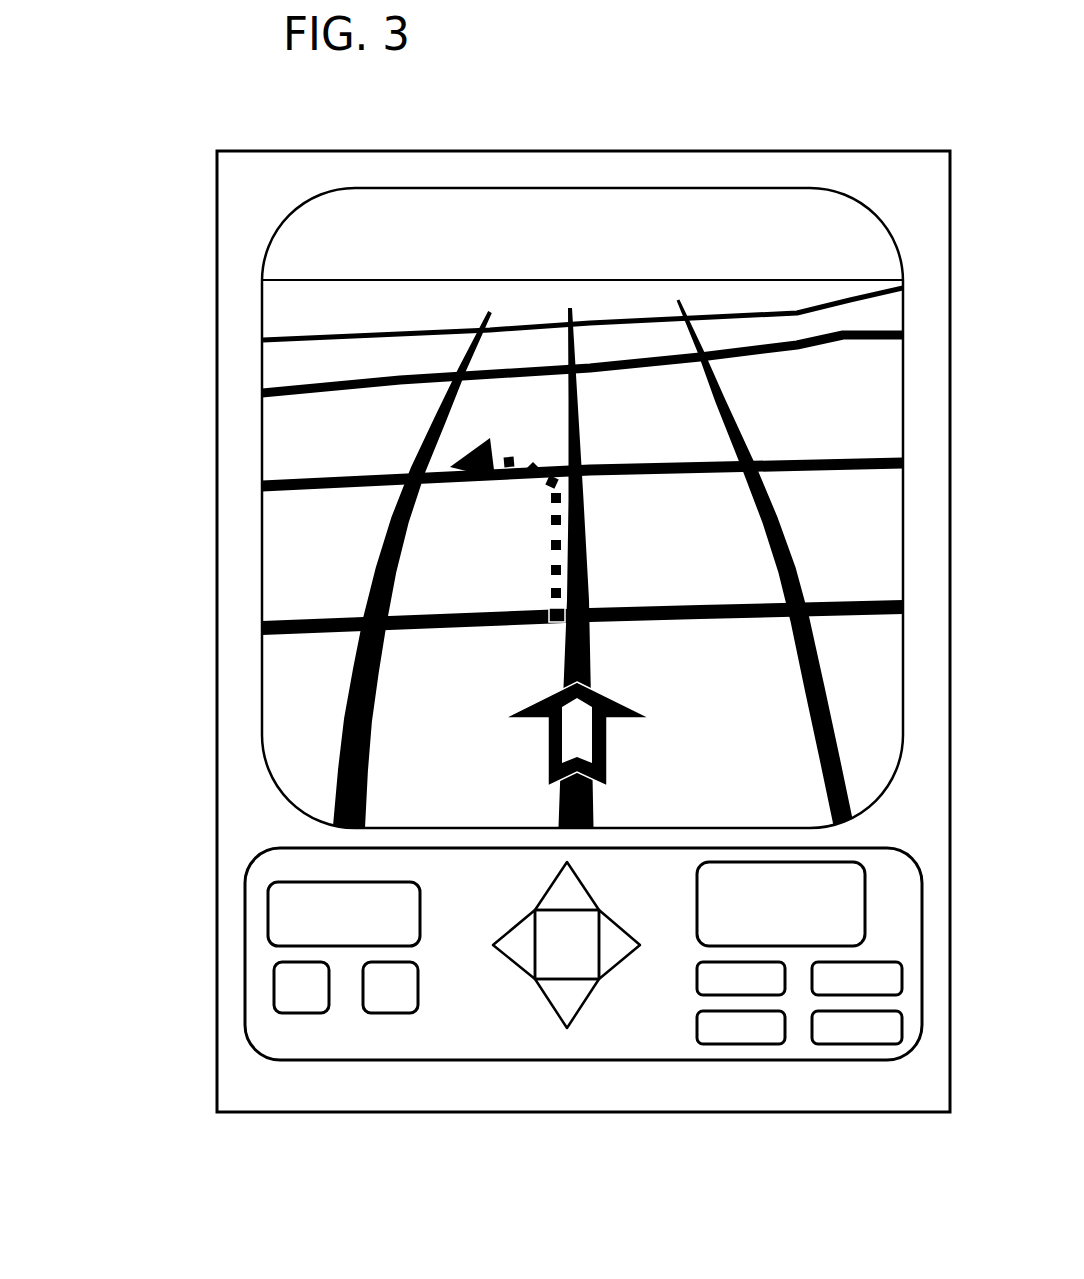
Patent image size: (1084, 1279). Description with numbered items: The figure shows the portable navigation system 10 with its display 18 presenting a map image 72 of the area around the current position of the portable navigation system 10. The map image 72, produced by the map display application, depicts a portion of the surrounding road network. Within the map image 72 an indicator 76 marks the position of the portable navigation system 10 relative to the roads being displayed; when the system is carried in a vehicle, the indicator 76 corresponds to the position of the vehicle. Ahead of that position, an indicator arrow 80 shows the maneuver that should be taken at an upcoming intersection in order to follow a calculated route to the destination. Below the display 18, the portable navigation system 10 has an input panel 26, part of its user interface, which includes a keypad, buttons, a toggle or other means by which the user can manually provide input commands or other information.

The portable navigation system 10 is at (582, 145).
The display 18 is at (298, 700).
The map image 72 is at (312, 236).
The indicator arrow 80 is at (545, 520).
The indicator 76 is at (547, 760).
The input panel 26 is at (435, 1032).